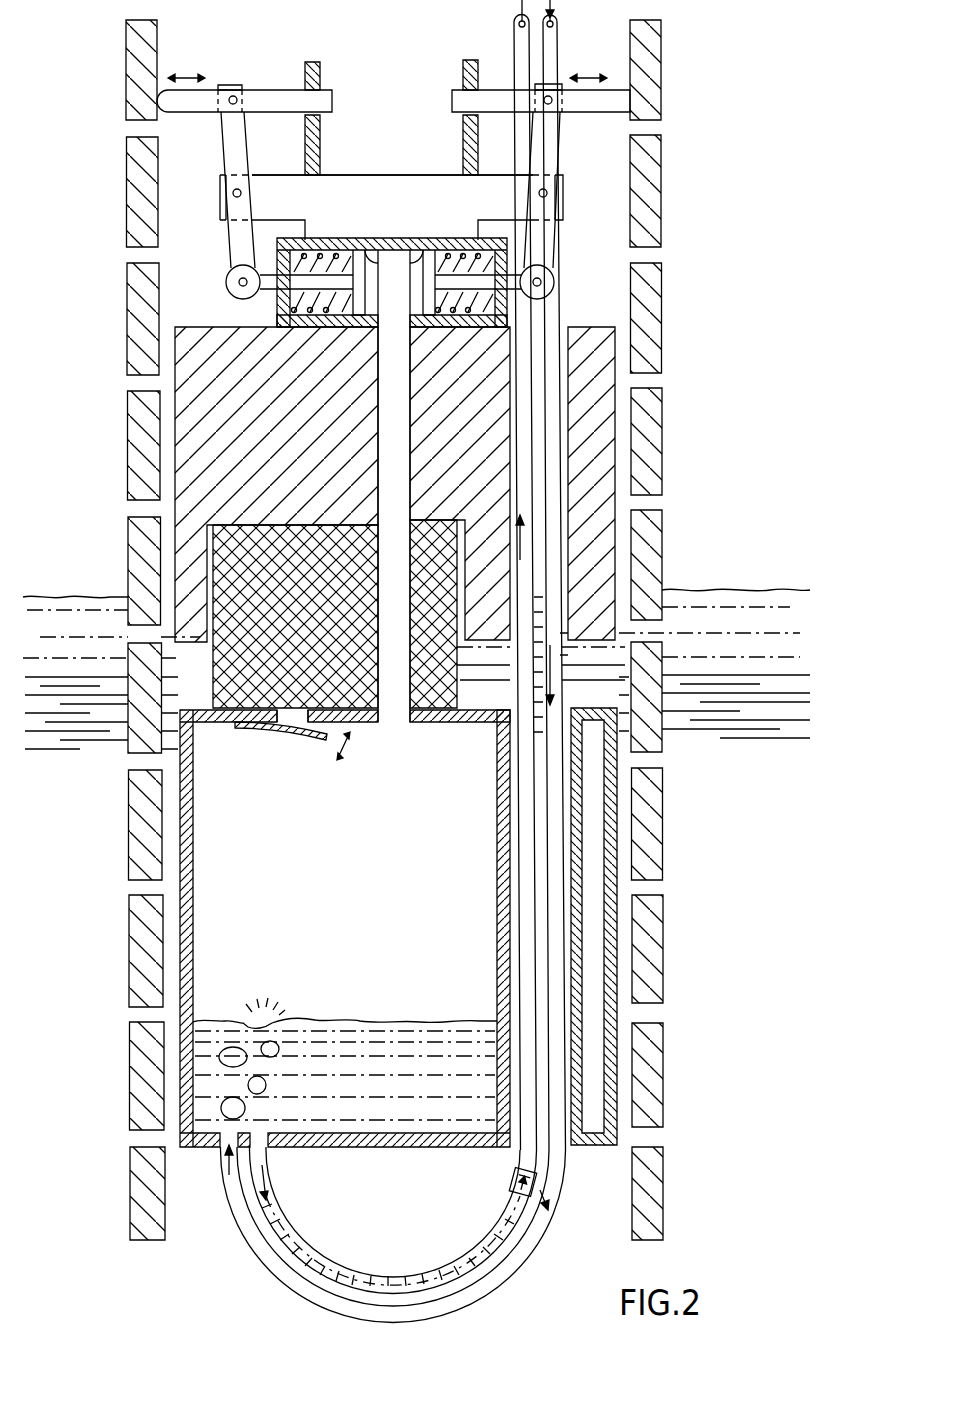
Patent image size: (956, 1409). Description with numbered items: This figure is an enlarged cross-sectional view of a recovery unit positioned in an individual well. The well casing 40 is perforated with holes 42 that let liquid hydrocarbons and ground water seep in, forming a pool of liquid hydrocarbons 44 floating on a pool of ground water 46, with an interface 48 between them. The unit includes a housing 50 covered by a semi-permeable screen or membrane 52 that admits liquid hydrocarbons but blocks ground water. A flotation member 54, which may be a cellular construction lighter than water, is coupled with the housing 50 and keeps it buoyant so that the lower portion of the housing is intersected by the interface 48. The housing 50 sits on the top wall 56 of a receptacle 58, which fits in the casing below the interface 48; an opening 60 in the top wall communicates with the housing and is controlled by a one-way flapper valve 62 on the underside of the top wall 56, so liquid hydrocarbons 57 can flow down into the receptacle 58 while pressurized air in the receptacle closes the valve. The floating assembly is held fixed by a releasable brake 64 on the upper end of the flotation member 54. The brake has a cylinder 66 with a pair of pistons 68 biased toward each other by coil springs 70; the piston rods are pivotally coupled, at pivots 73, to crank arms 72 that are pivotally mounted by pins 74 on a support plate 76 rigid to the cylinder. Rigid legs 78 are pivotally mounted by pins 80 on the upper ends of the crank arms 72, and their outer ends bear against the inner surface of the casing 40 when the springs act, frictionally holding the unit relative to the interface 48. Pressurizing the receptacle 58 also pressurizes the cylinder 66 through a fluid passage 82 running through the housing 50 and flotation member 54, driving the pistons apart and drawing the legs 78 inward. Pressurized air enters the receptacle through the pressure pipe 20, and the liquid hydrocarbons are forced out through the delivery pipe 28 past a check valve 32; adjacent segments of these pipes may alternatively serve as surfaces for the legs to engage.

The pressure pipe 20 is at (250, 1240).
The delivery pipe 28 is at (320, 1260).
The check valve 32 is at (510, 1181).
The well casing 40 is at (661, 338).
The holes 42 is at (650, 378).
The pool of liquid hydrocarbons 44 is at (58, 620).
The pool of ground water 46 is at (50, 712).
The interface 48 is at (42, 677).
The housing 50 is at (210, 575).
The semi-permeable screen or membrane 52 is at (440, 575).
The flotation member 54 is at (203, 435).
The top wall 56 is at (445, 722).
The liquid hydrocarbons 57 is at (380, 1040).
The receptacle 58 is at (498, 918).
The opening 60 is at (298, 716).
The one-way flapper valve 62 is at (288, 738).
The releasable brake 64 is at (348, 175).
The cylinder 66 is at (277, 313).
The pistons 68 is at (424, 245).
The coil springs 70 is at (316, 328).
The crank arms 72 is at (243, 146).
The pivot 73 is at (232, 281).
The pins 74 is at (244, 193).
The support plate 76 is at (400, 186).
The rigid legs 78 is at (275, 95).
The pins 80 is at (240, 88).
The fluid passage 82 is at (397, 692).